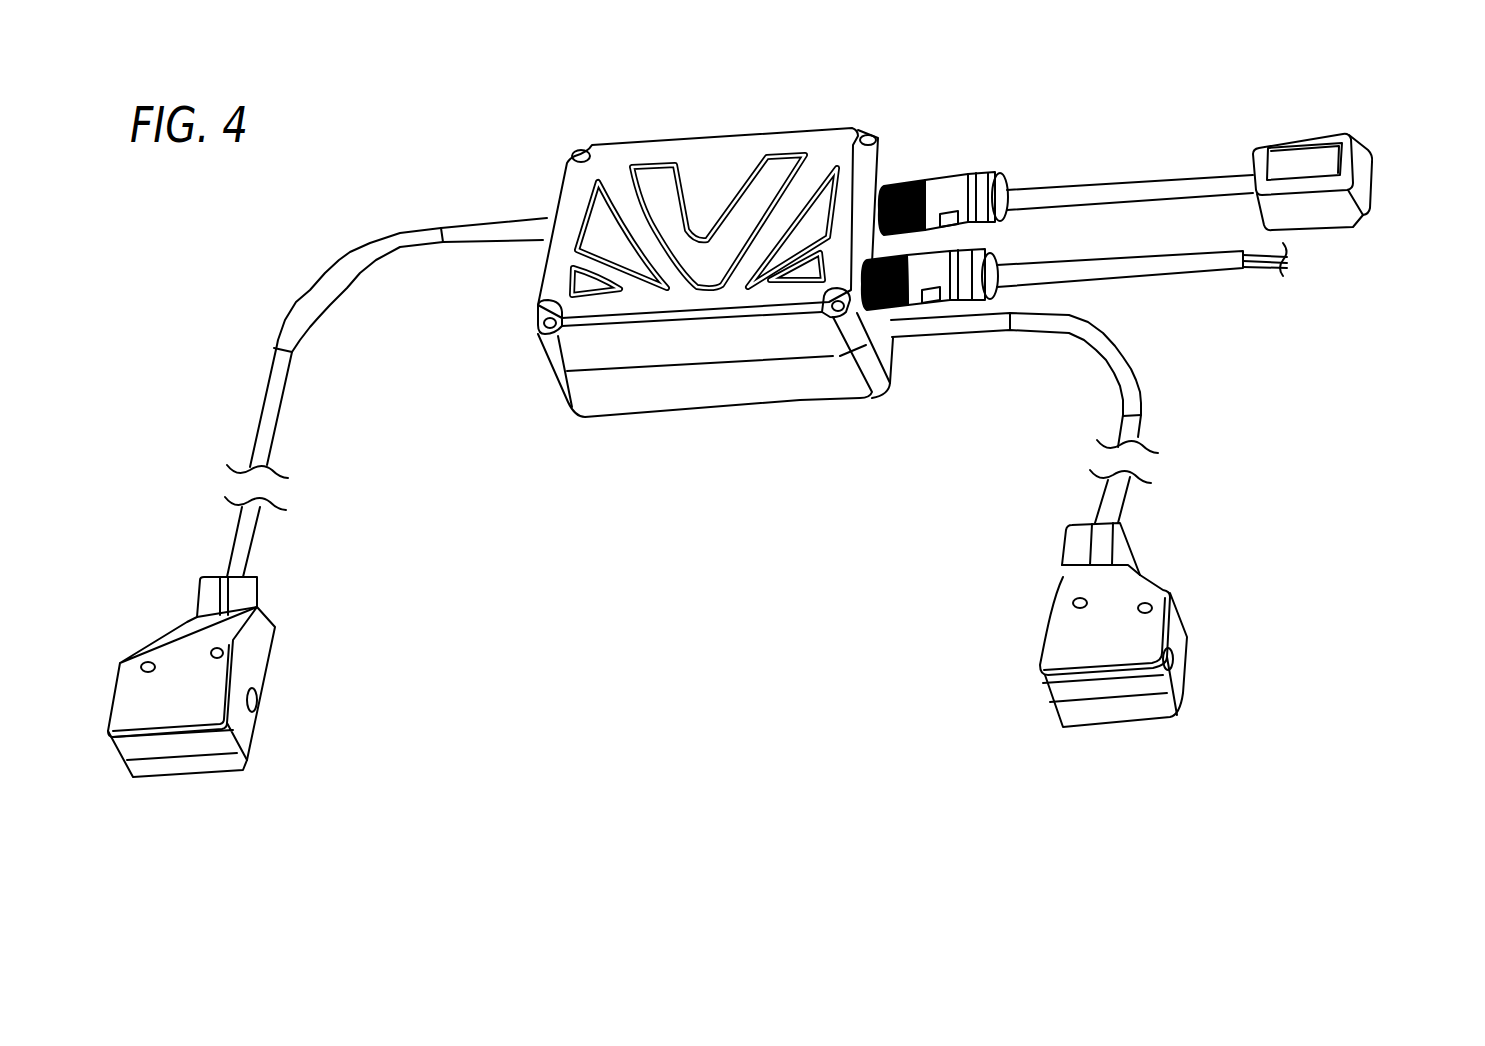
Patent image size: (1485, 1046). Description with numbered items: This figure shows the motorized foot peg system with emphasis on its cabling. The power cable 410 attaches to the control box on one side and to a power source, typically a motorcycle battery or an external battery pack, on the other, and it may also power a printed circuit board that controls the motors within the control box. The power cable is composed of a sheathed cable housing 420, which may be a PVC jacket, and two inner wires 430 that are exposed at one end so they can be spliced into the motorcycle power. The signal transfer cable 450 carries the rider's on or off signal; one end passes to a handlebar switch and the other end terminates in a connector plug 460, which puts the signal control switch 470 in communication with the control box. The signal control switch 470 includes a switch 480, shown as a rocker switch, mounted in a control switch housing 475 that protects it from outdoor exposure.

The power cable 410 is at (1142, 297).
The sheathed cable housing 420 is at (1212, 263).
The inner wires 430 is at (1270, 267).
The signal transfer cable 450 is at (1103, 190).
The connector plug 460 is at (950, 176).
The signal control switch 470 is at (1356, 122).
The control switch housing 475 is at (1363, 175).
The switch 480 is at (1292, 165).